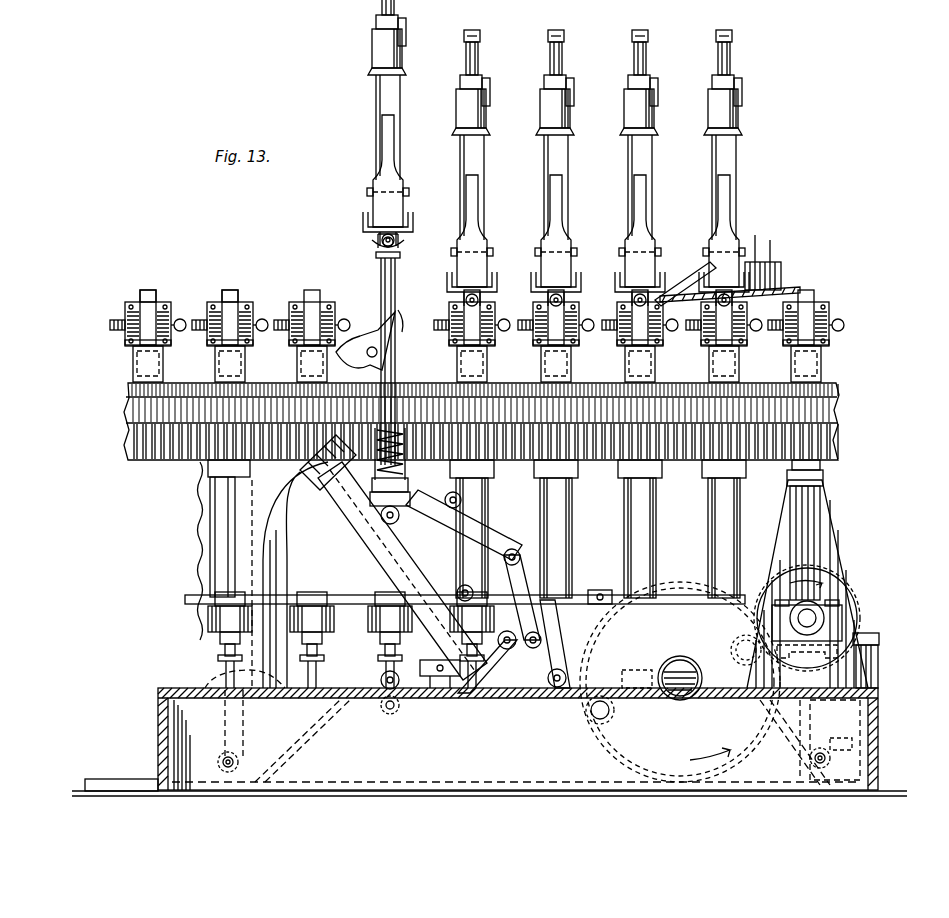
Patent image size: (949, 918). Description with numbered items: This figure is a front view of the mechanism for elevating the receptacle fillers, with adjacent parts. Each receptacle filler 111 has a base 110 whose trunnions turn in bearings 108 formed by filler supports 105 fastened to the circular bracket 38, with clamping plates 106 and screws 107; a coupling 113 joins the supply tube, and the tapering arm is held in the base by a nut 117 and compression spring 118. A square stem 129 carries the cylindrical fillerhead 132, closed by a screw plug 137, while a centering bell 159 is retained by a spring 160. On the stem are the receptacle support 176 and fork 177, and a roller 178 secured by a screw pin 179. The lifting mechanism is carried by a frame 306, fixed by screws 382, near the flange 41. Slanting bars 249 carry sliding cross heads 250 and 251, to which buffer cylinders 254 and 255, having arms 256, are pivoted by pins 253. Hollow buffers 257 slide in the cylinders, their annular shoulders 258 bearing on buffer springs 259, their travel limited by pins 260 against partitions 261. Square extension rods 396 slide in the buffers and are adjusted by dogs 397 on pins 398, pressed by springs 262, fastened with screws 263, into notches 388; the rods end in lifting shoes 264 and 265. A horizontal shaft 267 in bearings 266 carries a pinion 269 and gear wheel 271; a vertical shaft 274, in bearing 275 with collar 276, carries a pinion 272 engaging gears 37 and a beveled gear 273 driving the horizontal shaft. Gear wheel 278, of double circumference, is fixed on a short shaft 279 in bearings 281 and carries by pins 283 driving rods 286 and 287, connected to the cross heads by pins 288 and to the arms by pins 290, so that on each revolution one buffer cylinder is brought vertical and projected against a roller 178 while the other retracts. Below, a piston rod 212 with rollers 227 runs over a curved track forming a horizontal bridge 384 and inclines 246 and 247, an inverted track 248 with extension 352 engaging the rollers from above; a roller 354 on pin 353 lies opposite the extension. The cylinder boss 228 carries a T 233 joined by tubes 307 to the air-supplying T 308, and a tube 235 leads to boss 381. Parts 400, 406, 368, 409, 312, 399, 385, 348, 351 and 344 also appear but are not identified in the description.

The gear 37 is at (126, 452).
The circular bracket 38 is at (840, 386).
The pinion 272 is at (839, 440).
The stem 129 is at (400, 150).
The bottle 400 is at (466, 176).
The receptacle filler 111 is at (645, 160).
The rod 406 is at (752, 262).
The block 368 is at (760, 244).
The link 409 is at (680, 290).
The plate 312 is at (802, 287).
The screw plug 137 is at (388, 30).
The fillerhead 132 is at (395, 55).
The spring 160 is at (407, 88).
The centering bell 159 is at (375, 110).
The bottle 399 is at (380, 178).
The projection 177 is at (366, 191).
The projection 176 is at (364, 226).
The roller 178 is at (376, 242).
The lifting shoe 264 is at (404, 248).
The screw pin 179 is at (374, 256).
The dog 397 is at (380, 300).
The extension rod 396 is at (398, 300).
The lifting shoe 265 is at (376, 335).
The notch 388 is at (400, 312).
The pin 398 is at (398, 345).
The screw 263 is at (396, 357).
The spring 262 is at (396, 370).
The annular shoulder 258 is at (376, 420).
The buffer 257 is at (400, 413).
The buffer spring 259 is at (420, 455).
The pin 260 is at (400, 478).
The partition 261 is at (376, 476).
The buffer cylinder 254 is at (378, 490).
The pin 253 is at (380, 510).
The arm 256 is at (452, 492).
The cross head 250 is at (380, 560).
The pin 288 is at (392, 590).
The buffer cylinder 255 is at (460, 520).
The pinion 269 is at (525, 560).
The pin 290 is at (520, 556).
The driving rod 287 is at (620, 680).
The clamping plate 106 is at (128, 348).
The base 110 is at (150, 325).
The nut 117 is at (200, 318).
The compression spring 118 is at (194, 330).
The screw 107 is at (318, 292).
The filler support 105 is at (300, 362).
The strut 385 is at (565, 489).
The boss 381 is at (656, 488).
The tube 235 is at (650, 520).
The bearing 108 is at (840, 322).
The coupling 113 is at (840, 332).
The frame 306 is at (246, 525).
The slanting bar 249 is at (292, 500).
The tube 307 is at (200, 590).
The T 233 is at (208, 610).
The boss 228 is at (220, 636).
The screw 382 is at (230, 668).
The cross head 251 is at (380, 675).
The T 308 is at (596, 590).
The block 348 is at (430, 678).
The flange 41 is at (290, 688).
The incline 246 is at (300, 748).
The roller 227 is at (390, 700).
The bolt 351 is at (370, 690).
The horizontal bridge 384 is at (468, 690).
The link 344 is at (460, 700).
The driving rod 286 is at (540, 700).
The pin 283 is at (590, 715).
The short shaft 279 is at (670, 690).
The gear wheel 278 is at (680, 682).
The bearing 281 is at (672, 700).
The incline 247 is at (775, 756).
The inclined track 248 is at (790, 722).
The piston rod 212 is at (856, 726).
The horizontal extension 352 is at (854, 744).
The bearing 275 is at (828, 500).
The collar 276 is at (825, 482).
The vertical shaft 274 is at (822, 463).
The gear wheel 271 is at (840, 575).
The horizontal shaft 267 is at (820, 612).
The bearing 266 is at (840, 618).
The beveled gear 273 is at (840, 640).
The roller 354 is at (880, 638).
The pin 353 is at (879, 665).